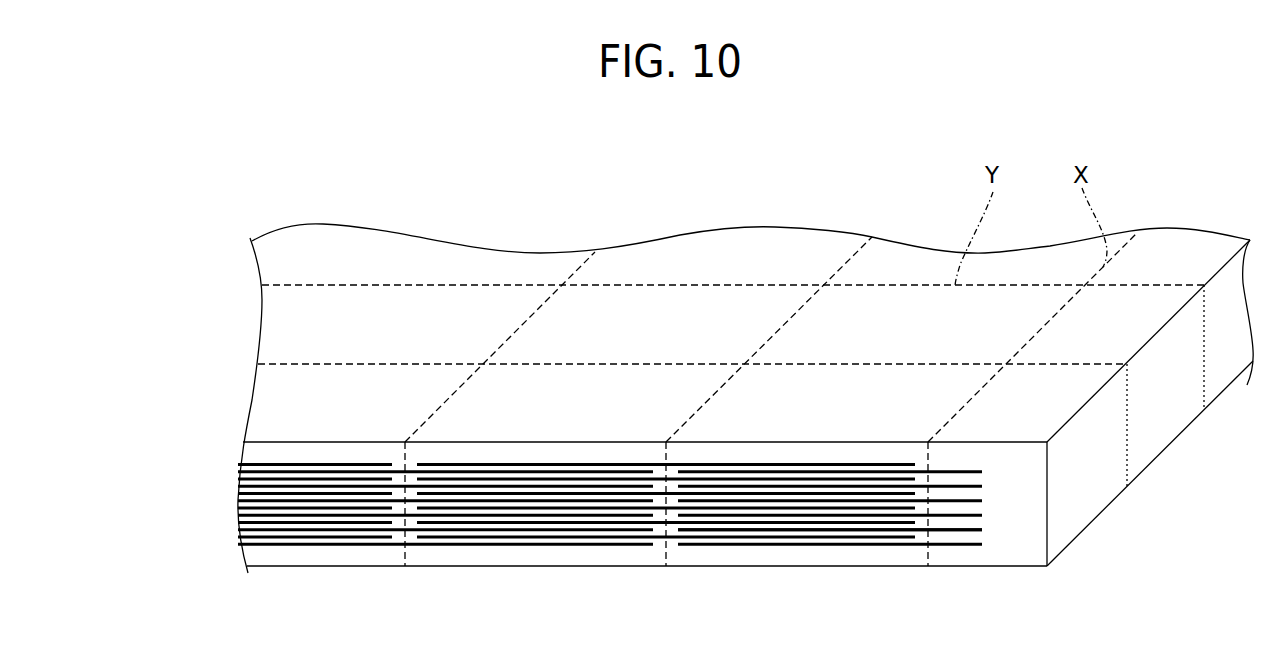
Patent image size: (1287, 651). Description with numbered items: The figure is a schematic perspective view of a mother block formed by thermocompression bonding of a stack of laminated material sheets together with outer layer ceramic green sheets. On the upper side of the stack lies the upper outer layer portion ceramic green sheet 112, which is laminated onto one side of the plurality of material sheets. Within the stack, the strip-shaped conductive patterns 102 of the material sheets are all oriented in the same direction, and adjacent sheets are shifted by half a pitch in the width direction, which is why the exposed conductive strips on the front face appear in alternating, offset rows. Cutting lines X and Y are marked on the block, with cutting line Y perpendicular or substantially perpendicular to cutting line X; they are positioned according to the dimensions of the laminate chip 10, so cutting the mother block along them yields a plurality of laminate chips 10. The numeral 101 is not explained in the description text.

The laminate chip 10 is at (658, 308).
The upper outer layer portion ceramic green sheet 112 is at (277, 450).
The strip-shaped conductive pattern 102 is at (840, 463).
The electrode line 101 is at (893, 533).